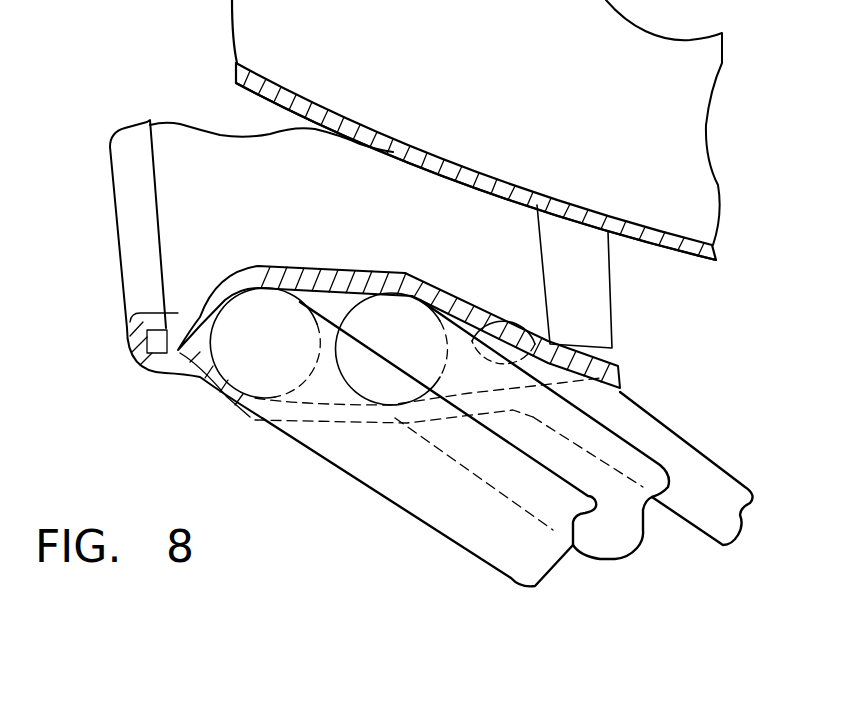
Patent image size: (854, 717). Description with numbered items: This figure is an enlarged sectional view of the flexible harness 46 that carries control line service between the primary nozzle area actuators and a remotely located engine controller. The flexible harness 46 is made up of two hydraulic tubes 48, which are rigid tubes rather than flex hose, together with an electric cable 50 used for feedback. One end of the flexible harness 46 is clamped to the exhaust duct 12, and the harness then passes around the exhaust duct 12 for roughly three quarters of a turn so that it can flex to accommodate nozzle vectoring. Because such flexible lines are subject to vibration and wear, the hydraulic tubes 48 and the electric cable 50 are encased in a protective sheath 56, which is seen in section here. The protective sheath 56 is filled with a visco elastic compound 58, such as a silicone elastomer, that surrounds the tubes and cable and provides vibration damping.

The exhaust duct 12 is at (666, 257).
The flexible harness 46 is at (505, 580).
The hydraulic tubes 48 is at (398, 350).
The electric cable 50 is at (500, 338).
The protective sheath 56 is at (288, 333).
The visco elastic compound 58 is at (330, 397).